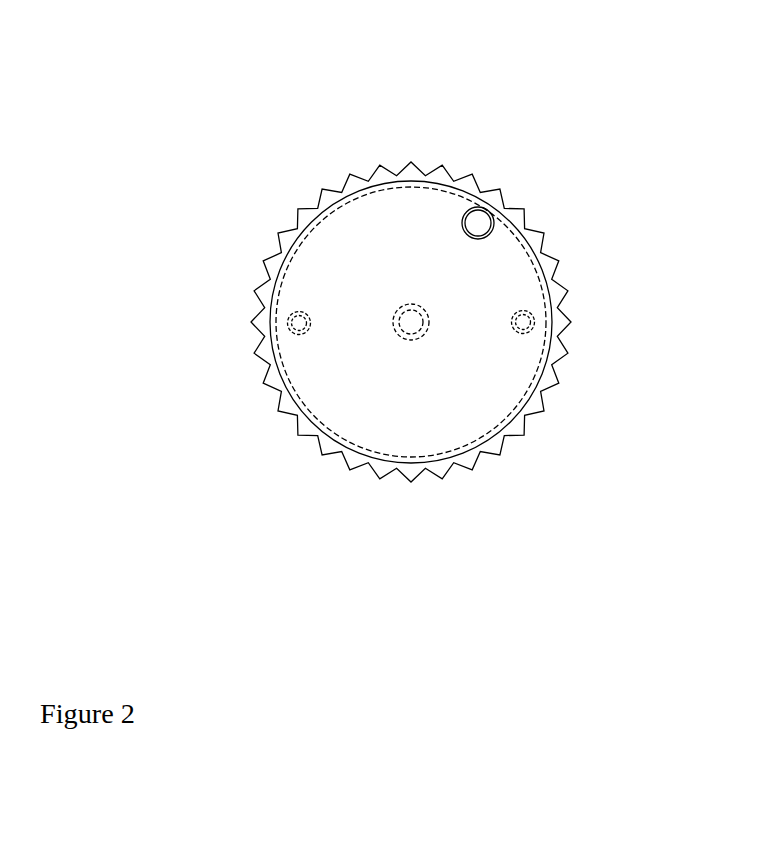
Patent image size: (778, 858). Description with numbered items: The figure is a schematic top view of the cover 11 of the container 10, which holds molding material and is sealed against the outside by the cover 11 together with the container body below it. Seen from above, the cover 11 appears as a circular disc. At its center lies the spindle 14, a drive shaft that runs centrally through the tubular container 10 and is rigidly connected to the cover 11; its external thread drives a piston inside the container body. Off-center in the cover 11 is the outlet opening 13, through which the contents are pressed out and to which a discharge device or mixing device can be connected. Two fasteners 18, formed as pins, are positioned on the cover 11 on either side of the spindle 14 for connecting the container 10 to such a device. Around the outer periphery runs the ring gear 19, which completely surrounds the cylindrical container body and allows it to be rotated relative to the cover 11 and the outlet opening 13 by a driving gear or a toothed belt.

The container 10 is at (285, 94).
The cover 11 is at (409, 237).
The outlet opening 13 is at (487, 211).
The spindle 14 is at (398, 311).
The fasteners 18 is at (286, 322).
The ring gear 19 is at (563, 386).